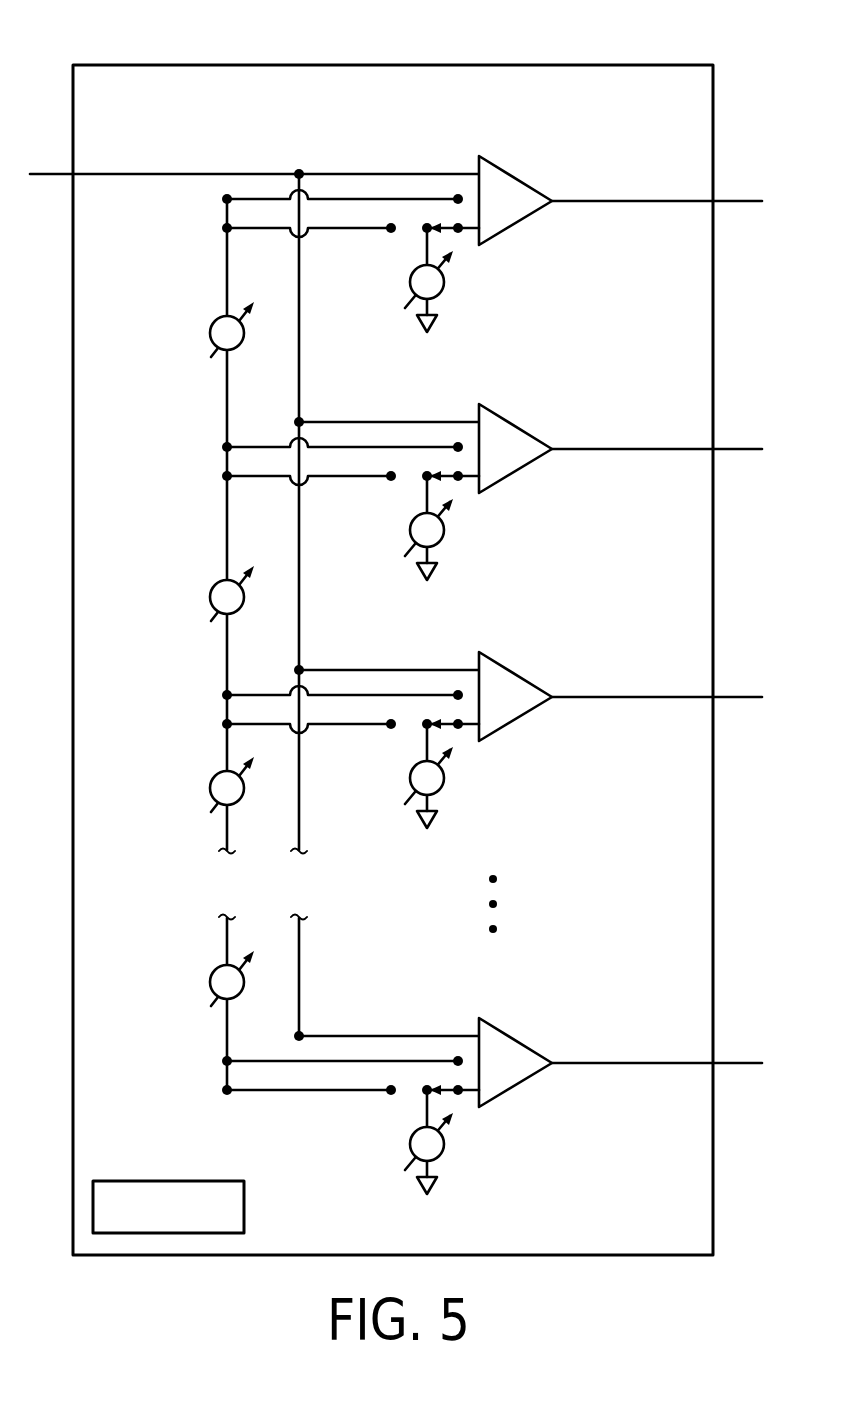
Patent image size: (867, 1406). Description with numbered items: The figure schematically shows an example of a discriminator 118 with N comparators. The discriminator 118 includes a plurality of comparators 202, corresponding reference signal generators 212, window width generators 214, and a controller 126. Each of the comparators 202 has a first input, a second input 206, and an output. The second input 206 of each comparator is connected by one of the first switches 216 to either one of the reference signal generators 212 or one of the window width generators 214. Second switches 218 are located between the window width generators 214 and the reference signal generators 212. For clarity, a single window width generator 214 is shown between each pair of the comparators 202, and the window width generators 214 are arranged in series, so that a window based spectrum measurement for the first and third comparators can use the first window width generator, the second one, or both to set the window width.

The discriminator 118 is at (392, 65).
The controller 126 is at (168, 1181).
The comparators 202 is at (573, 592).
The second inputs 206 is at (540, 1125).
The reference signal generators 212 is at (505, 1180).
The window width generators 214 is at (175, 607).
The first switches 216 is at (522, 1145).
The second switches 218 is at (319, 1137).